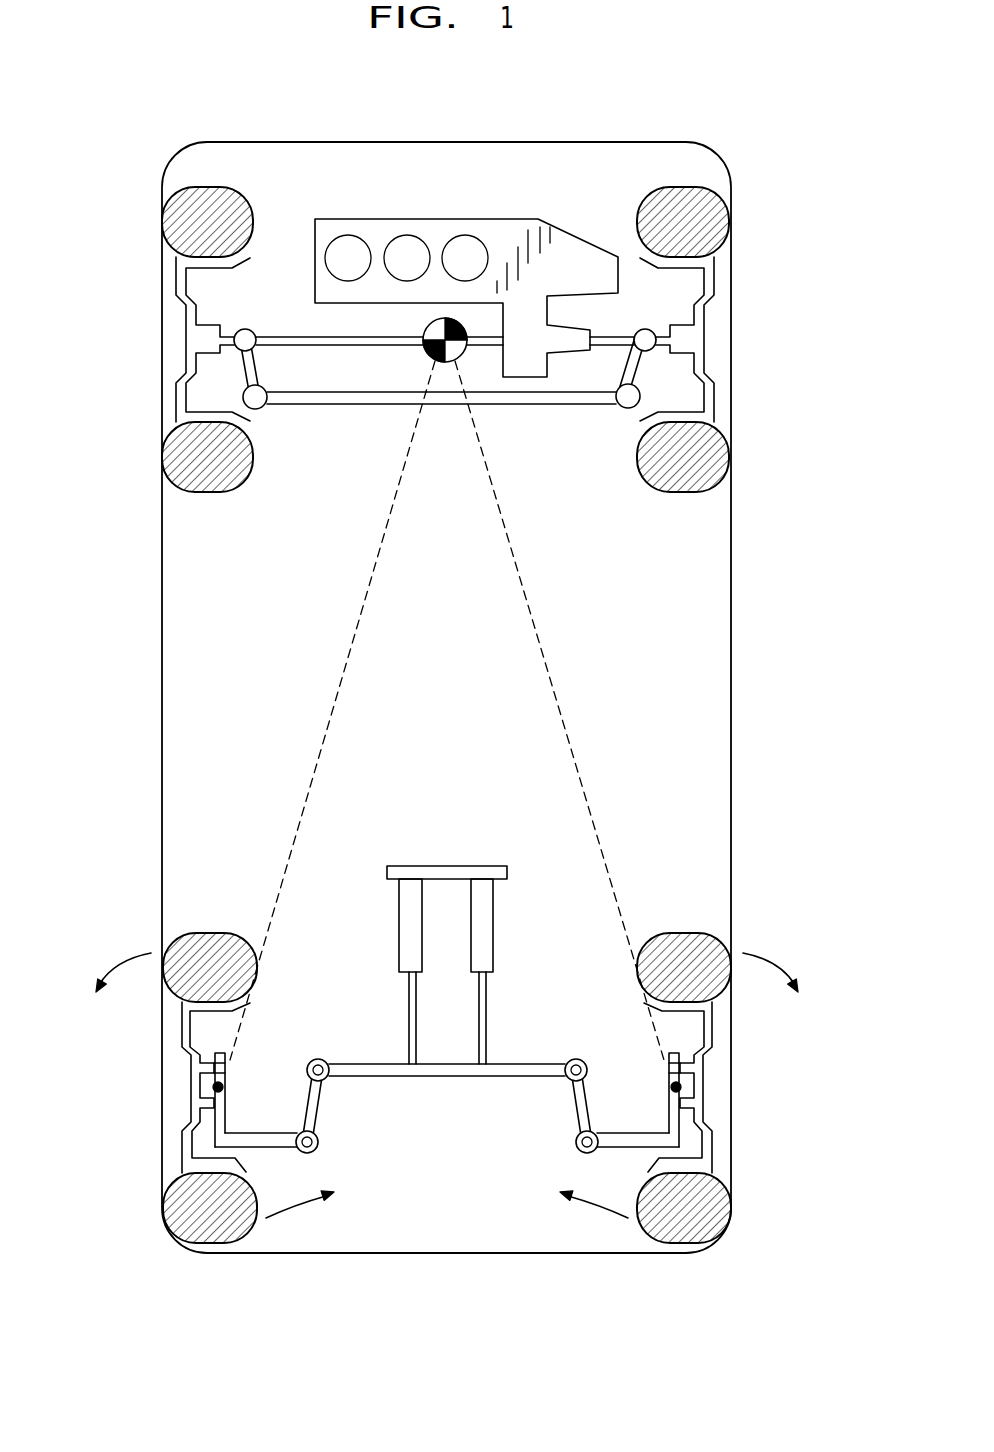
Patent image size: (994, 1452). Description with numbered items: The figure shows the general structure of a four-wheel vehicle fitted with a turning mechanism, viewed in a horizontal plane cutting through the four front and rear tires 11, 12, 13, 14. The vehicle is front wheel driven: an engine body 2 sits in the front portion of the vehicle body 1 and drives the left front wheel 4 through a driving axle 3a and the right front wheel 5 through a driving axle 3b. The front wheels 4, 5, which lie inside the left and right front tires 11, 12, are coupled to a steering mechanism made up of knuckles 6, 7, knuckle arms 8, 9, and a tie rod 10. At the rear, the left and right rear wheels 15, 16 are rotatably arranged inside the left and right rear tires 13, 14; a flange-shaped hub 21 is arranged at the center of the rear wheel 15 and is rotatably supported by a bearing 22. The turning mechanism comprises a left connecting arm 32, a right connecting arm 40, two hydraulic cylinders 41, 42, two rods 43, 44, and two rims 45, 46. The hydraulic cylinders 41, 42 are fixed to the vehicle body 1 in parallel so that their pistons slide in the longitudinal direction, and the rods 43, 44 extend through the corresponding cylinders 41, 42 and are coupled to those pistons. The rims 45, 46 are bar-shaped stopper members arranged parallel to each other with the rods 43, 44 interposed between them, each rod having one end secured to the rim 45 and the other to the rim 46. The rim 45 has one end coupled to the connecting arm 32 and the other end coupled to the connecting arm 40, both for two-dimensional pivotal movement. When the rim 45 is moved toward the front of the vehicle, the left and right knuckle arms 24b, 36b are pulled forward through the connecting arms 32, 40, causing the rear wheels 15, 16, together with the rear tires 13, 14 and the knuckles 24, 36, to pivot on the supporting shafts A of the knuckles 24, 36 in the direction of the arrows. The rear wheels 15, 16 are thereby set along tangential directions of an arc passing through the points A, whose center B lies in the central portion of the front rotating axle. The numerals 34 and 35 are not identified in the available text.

The vehicle body 1 is at (162, 648).
The engine body 2 is at (363, 219).
The driving axle 3a is at (296, 337).
The driving axle 3b is at (606, 338).
The left front wheel 4 is at (176, 292).
The right front wheel 5 is at (714, 292).
The knuckle 6 is at (245, 330).
The knuckle 7 is at (645, 330).
The knuckle arm 8 is at (256, 372).
The knuckle arm 9 is at (625, 378).
The tie rod 10 is at (328, 405).
The left front tire 11 is at (170, 217).
The right front tire 12 is at (720, 217).
The left rear tire 13 is at (176, 940).
The right rear tire 14 is at (716, 940).
The left rear wheel 15 is at (182, 1030).
The right rear wheel 16 is at (712, 1030).
The hub 21 is at (186, 1112).
The bearing 22 is at (222, 1052).
The knuckle 24 is at (236, 1053).
The knuckle arm 24b is at (270, 1140).
The left connecting arm 32 is at (322, 1108).
The right rear knuckle 34 is at (708, 1112).
The right rear knuckle axle portion 35 is at (672, 1052).
The knuckle 36 is at (658, 1053).
The knuckle arm 36b is at (628, 1140).
The right connecting arm 40 is at (572, 1108).
The hydraulic cylinder 41 is at (399, 915).
The hydraulic cylinder 42 is at (493, 915).
The rod 43 is at (409, 985).
The rod 44 is at (486, 985).
The rim 45 is at (449, 1078).
The rim 46 is at (447, 866).
The supporting shaft A is at (214, 1087).
The center of arc B is at (452, 350).